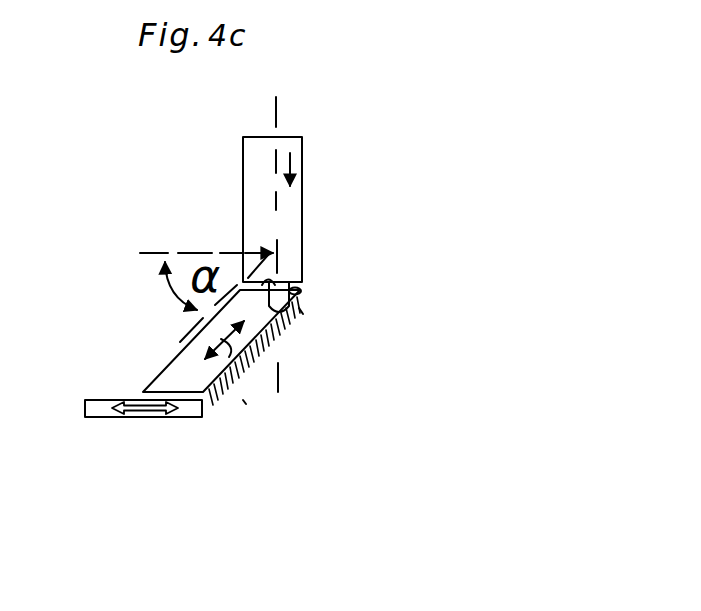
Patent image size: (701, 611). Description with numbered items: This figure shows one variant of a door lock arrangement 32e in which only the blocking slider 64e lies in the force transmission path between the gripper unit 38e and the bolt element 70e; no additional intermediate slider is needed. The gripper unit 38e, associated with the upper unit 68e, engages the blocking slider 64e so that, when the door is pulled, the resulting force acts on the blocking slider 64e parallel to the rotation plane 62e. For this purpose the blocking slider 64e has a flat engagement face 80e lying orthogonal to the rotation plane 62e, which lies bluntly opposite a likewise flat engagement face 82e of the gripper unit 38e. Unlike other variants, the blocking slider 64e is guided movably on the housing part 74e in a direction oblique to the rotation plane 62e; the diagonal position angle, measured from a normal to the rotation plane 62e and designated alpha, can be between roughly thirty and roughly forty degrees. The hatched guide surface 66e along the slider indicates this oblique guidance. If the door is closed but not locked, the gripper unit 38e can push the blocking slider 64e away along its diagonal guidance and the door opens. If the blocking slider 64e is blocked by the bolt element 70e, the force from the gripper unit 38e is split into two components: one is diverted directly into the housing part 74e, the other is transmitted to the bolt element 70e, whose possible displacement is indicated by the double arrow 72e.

The coating arrangement 32e is at (412, 69).
The rotation plane 62e is at (276, 112).
The housing / feed unit 68e is at (302, 157).
The gripper unit 38e is at (303, 251).
The engagement face of the gripper unit 82e is at (298, 304).
The engagement face 80e is at (297, 313).
The blocking slider 64e is at (162, 372).
The coating layer 66e is at (248, 373).
The housing part 74e is at (243, 400).
The bolt element 70e is at (96, 418).
The displacement arrow 72e is at (147, 418).